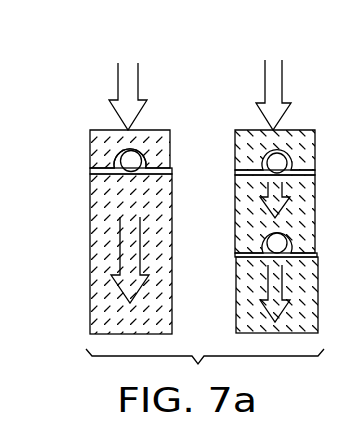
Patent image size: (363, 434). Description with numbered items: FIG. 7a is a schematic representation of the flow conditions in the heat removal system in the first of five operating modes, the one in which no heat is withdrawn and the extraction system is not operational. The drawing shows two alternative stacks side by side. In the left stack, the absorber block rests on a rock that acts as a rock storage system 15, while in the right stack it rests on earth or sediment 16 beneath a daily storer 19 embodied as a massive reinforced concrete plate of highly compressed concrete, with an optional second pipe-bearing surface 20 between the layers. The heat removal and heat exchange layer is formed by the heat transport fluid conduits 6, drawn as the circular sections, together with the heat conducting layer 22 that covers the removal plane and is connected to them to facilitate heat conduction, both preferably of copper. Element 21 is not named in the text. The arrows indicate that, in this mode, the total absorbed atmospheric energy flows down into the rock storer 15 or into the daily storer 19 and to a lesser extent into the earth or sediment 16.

The heat transport fluid conduits 6 is at (140, 158).
The rock storage system 15 is at (160, 210).
The earth or sediment 16 is at (236, 281).
The daily storer 19 is at (315, 215).
The second pipe-bearing surface 20 is at (168, 171).
The upper block 21 is at (168, 150).
The heat conducting layer 22 is at (133, 158).